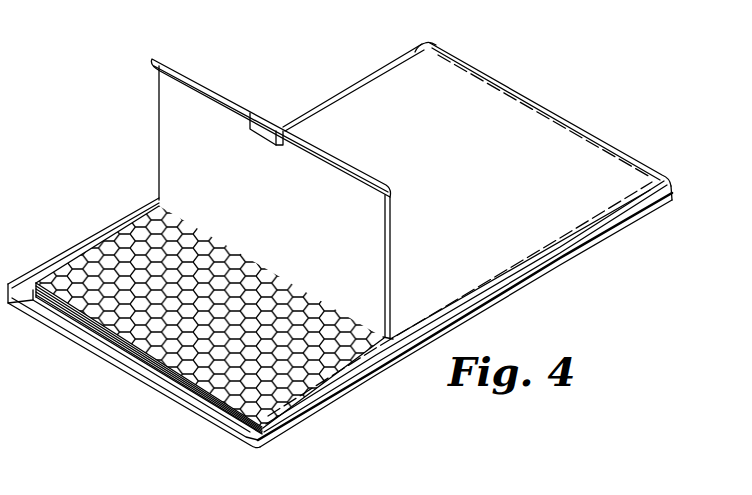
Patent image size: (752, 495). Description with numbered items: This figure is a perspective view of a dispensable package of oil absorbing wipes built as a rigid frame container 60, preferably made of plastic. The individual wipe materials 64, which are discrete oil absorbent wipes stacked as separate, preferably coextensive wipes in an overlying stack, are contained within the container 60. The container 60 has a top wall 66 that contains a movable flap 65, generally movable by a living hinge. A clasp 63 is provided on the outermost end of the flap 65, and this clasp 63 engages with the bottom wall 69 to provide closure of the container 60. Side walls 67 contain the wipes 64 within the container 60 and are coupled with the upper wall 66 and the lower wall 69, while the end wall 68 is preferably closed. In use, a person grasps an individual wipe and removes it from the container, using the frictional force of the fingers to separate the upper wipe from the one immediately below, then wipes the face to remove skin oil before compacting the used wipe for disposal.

The rigid frame container 60 is at (368, 230).
The clasp 63 is at (265, 127).
The wipe materials 64 is at (85, 243).
The movable flap 65 is at (203, 82).
The top wall 66 is at (576, 148).
The side walls 67 is at (377, 67).
The end wall 68 is at (531, 97).
The bottom wall 69 is at (73, 345).